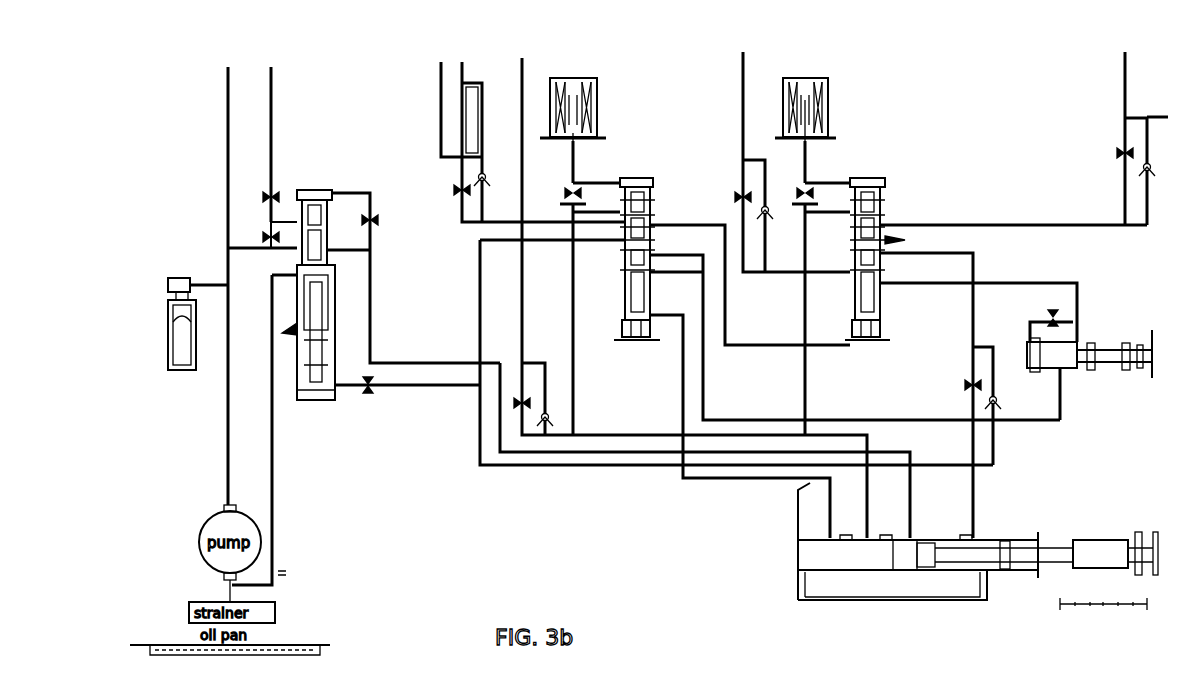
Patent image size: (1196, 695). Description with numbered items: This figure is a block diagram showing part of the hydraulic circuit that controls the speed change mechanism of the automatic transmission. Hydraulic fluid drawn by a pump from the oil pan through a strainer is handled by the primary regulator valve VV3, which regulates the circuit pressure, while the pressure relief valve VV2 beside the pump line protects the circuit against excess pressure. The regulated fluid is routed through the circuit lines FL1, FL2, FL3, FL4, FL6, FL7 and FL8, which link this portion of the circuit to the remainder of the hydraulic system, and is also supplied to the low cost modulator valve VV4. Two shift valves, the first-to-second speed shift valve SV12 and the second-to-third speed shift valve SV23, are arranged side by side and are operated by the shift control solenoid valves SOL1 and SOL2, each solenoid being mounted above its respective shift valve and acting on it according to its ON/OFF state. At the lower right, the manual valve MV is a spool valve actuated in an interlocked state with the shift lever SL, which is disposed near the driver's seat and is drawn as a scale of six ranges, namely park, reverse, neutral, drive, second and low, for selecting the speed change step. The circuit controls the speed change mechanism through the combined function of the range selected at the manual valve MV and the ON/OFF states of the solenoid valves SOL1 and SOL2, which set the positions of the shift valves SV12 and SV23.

The fluid line 1 FL1 is at (254, 275).
The fluid line 2 FL2 is at (277, 146).
The fluid line 3 FL3 is at (448, 96).
The fluid line 4 FL4 is at (688, 286).
The fluid line 6 FL6 is at (1132, 124).
The fluid line 7 FL7 is at (1170, 112).
The fluid line 8 FL8 is at (539, 128).
The pressure relief valve VV2 is at (168, 345).
The primary regulator valve VV3 is at (330, 190).
The low cost modulator valve VV4 is at (1086, 342).
The shift control solenoid valve SOL1 is at (597, 101).
The shift control solenoid valve SOL2 is at (828, 100).
The 2-3 speed shift valve SV23 is at (632, 340).
The 1-2 speed shift valve SV12 is at (880, 340).
The manual valve MV is at (1090, 542).
The shift lever SL is at (1132, 609).